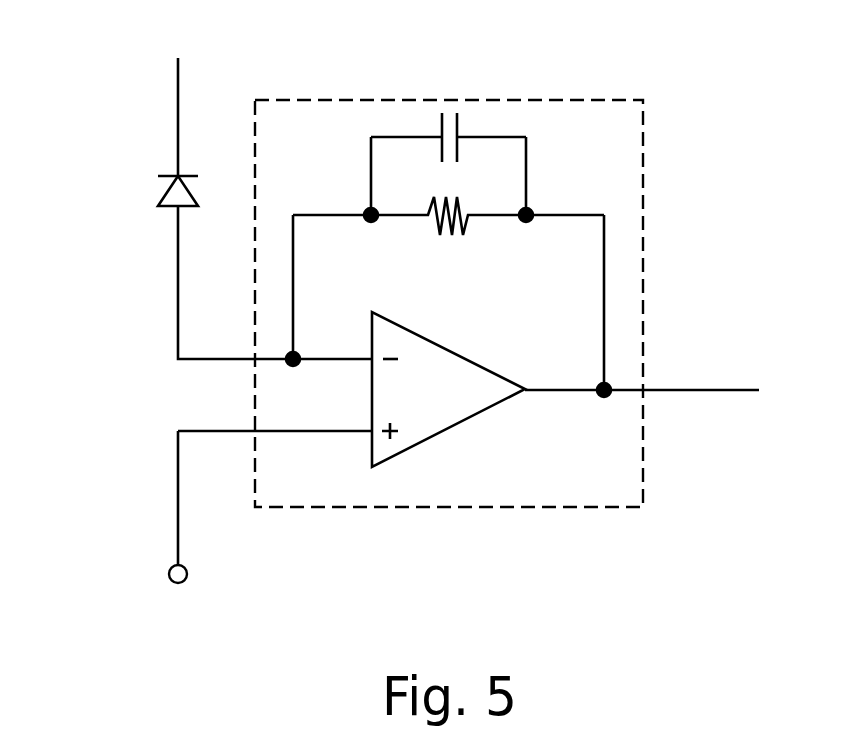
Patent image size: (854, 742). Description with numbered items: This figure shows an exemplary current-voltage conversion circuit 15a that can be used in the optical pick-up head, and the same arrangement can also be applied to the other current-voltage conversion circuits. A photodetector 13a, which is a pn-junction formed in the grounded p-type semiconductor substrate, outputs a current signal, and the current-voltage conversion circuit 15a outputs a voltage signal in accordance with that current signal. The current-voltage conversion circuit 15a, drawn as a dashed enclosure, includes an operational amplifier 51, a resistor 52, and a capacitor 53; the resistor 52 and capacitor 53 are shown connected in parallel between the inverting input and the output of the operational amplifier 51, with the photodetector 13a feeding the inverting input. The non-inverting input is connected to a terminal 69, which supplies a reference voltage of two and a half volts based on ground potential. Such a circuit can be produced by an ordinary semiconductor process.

The photodetector 13a is at (167, 193).
The current-voltage conversion circuit 15a is at (645, 207).
The operational amplifier 51 is at (450, 431).
The resistor 52 is at (466, 228).
The capacitor 53 is at (458, 124).
The terminal 69 is at (168, 574).